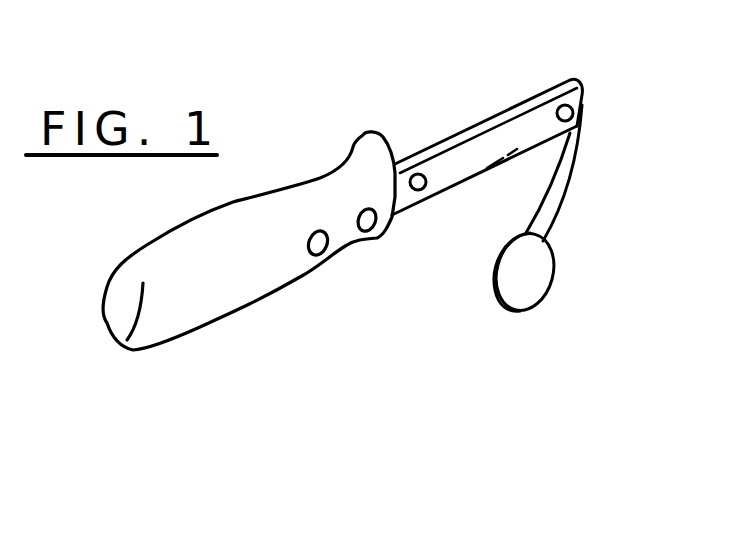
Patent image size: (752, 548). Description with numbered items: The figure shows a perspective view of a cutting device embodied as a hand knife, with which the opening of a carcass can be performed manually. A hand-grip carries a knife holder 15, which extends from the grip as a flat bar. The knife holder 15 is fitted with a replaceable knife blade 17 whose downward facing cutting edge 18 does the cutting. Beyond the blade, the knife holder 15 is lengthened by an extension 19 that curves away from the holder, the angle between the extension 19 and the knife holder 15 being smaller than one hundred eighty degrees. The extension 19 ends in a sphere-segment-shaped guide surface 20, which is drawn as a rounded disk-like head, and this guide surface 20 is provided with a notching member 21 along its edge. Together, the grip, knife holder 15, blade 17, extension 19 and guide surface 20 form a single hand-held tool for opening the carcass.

The knife holder 15 is at (550, 90).
The replaceable knife blade 17 is at (497, 147).
The cutting edge 18 is at (478, 176).
The extension 19 is at (571, 153).
The sphere-segment-shaped guide surface 20 is at (556, 268).
The notching member 21 is at (502, 313).